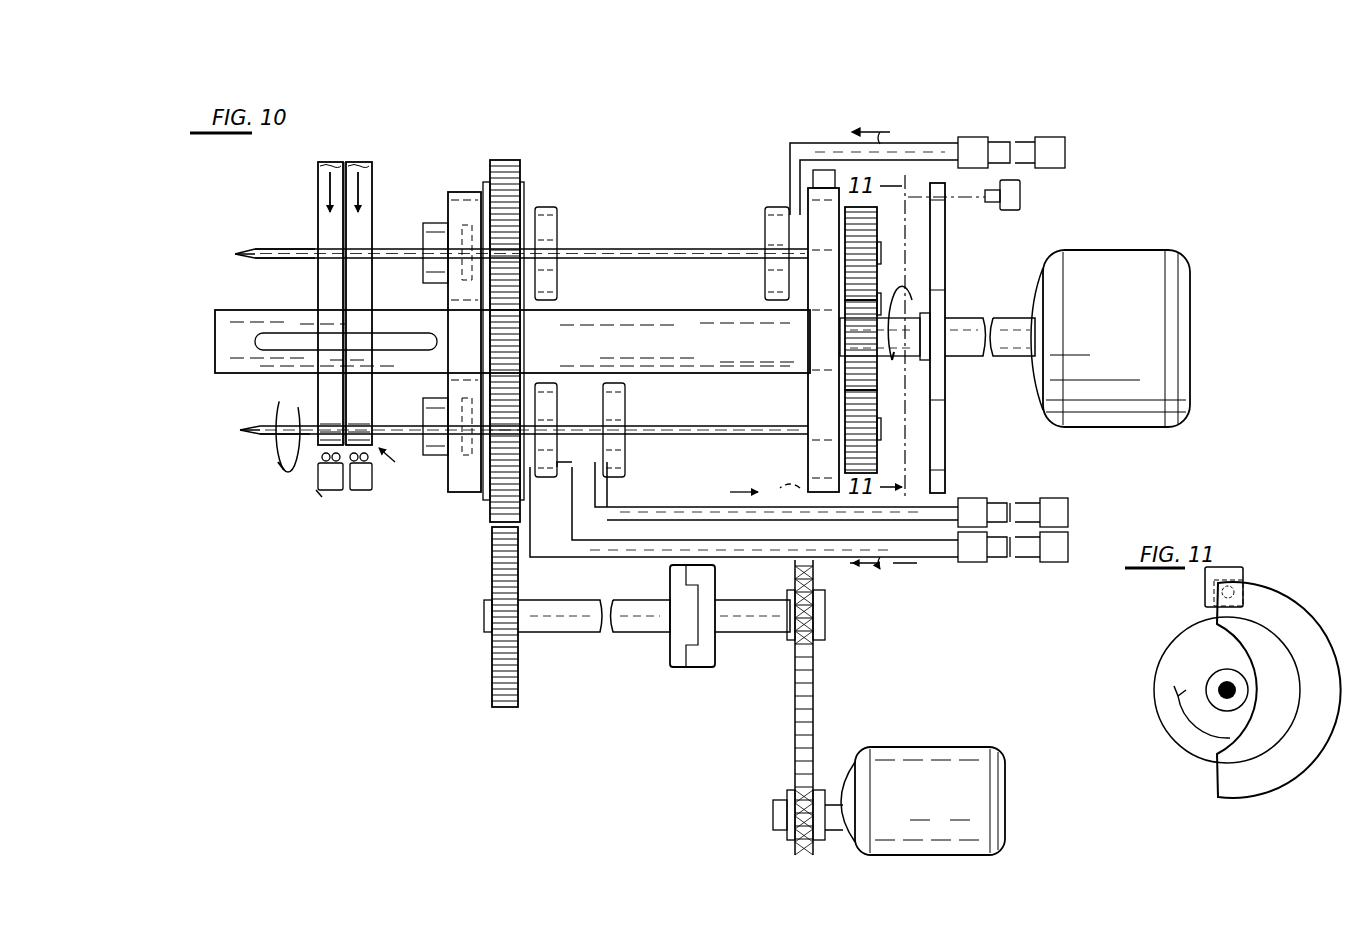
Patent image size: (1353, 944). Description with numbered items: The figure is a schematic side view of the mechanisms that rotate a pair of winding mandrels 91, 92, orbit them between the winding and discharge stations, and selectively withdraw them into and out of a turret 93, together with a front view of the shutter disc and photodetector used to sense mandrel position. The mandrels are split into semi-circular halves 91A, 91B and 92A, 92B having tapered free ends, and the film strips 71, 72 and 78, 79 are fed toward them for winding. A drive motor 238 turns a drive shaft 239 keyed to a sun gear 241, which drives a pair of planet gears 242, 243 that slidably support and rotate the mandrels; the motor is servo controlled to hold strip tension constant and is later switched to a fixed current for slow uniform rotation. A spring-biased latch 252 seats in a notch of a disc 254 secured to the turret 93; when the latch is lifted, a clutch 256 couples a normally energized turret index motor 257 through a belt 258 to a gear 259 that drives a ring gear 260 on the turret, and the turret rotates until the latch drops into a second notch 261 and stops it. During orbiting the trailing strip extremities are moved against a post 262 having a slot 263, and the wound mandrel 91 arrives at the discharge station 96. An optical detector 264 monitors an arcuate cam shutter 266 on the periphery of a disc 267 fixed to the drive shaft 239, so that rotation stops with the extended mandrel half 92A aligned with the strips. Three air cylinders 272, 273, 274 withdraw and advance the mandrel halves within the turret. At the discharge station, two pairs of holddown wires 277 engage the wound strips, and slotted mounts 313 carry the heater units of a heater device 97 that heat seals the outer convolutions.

In FIG. 10, the film strip 71 is at (318, 193).
In FIG. 10, the film strip 78 is at (266, 207).
In FIG. 10, the film strip 72 is at (372, 160).
In FIG. 10, the film strip 79 is at (372, 172).
In FIG. 10, the turret 93 is at (461, 190).
In FIG. 10, the mandrel 92 is at (390, 248).
In FIG. 10, the mandrel half 92A is at (290, 248).
In FIG. 10, the mandrel half 92B is at (415, 262).
In FIG. 10, the post 262 is at (291, 310).
In FIG. 10, the slot 263 is at (387, 344).
In FIG. 10, the mandrel 91 is at (268, 423).
In FIG. 10, the mandrel half 91A is at (266, 428).
In FIG. 10, the mandrel half 91B is at (275, 436).
In FIG. 10, the discharge station 96 is at (411, 484).
In FIG. 10, the holddown wires 277 is at (358, 474).
In FIG. 10, the mounts 313 is at (355, 490).
In FIG. 10, the heater device 97 is at (320, 496).
In FIG. 10, the ring gear 260 is at (488, 518).
In FIG. 10, the gear 259 is at (490, 652).
In FIG. 10, the clutch 256 is at (682, 666).
In FIG. 10, the belt 258 is at (792, 733).
In FIG. 10, the turret index motor 257 is at (915, 748).
In FIG. 10, the latch 252 is at (813, 176).
In FIG. 10, the planet gear 242 is at (878, 225).
In FIG. 10, the sun gear 241 is at (878, 370).
In FIG. 10, the planet gear 243 is at (880, 455).
In FIG. 10, the disc 254 is at (808, 447).
In FIG. 10, the second notch 261 is at (787, 486).
In FIG. 10, the cam shutter 266 is at (946, 421).
In FIG. 11, the cam shutter 266 is at (1315, 622).
In FIG. 10, the drive shaft 239 is at (997, 318).
In FIG. 11, the drive shaft 239 is at (1222, 685).
In FIG. 10, the motor 238 is at (1090, 250).
In FIG. 10, the air cylinder 272 is at (1050, 138).
In FIG. 10, the optical detector 264 is at (1020, 194).
In FIG. 11, the optical detector 264 is at (1205, 578).
In FIG. 10, the air cylinder 273 is at (1018, 497).
In FIG. 10, the air cylinder 274 is at (1044, 560).
In FIG. 11, the disc 267 is at (1166, 731).